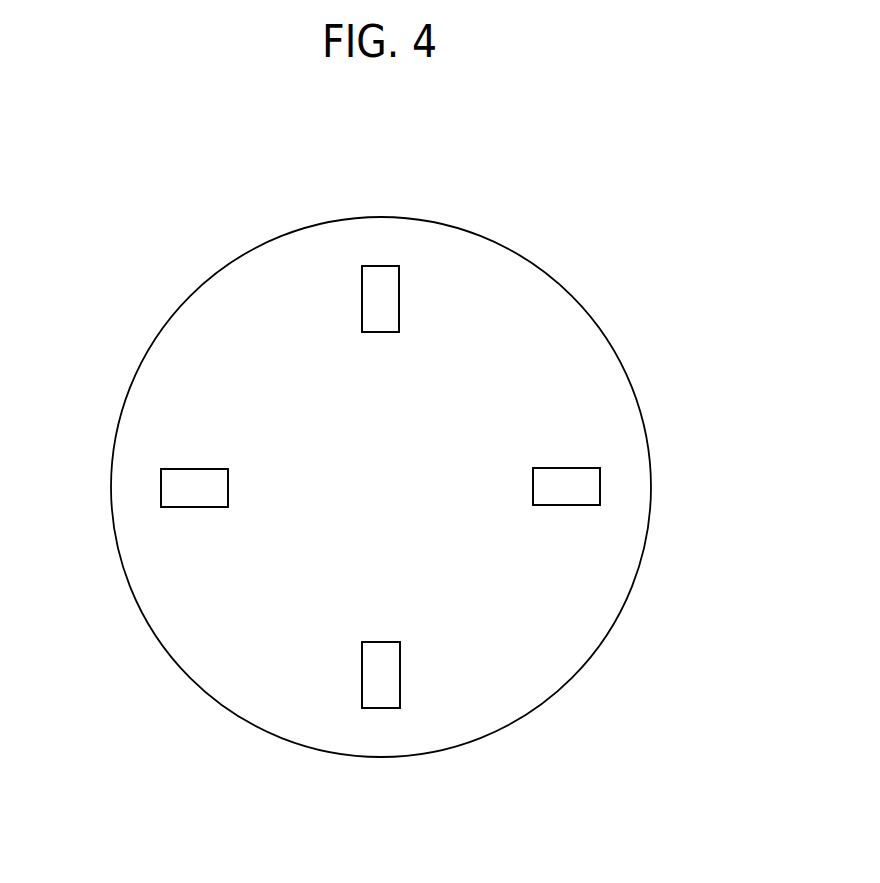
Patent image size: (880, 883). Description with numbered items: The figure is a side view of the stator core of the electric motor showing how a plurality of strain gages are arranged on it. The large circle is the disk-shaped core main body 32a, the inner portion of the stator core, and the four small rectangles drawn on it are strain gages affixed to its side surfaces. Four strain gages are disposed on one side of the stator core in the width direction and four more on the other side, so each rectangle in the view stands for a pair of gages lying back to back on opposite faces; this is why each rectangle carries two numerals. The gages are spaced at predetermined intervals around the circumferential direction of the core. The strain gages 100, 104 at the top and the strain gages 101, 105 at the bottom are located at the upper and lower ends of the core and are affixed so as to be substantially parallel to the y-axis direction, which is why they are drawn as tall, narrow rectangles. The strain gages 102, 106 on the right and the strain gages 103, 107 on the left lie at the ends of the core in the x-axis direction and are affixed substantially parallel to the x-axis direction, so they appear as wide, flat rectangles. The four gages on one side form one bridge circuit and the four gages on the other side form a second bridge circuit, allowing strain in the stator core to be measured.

The core main body 32a is at (555, 303).
The strain gage 100 is at (388, 266).
The strain gage 104 is at (380, 299).
The strain gage 101 is at (400, 693).
The strain gage 105 is at (381, 675).
The strain gage 102 is at (600, 477).
The strain gage 106 is at (566, 486).
The strain gage 103 is at (175, 507).
The strain gage 107 is at (194, 488).